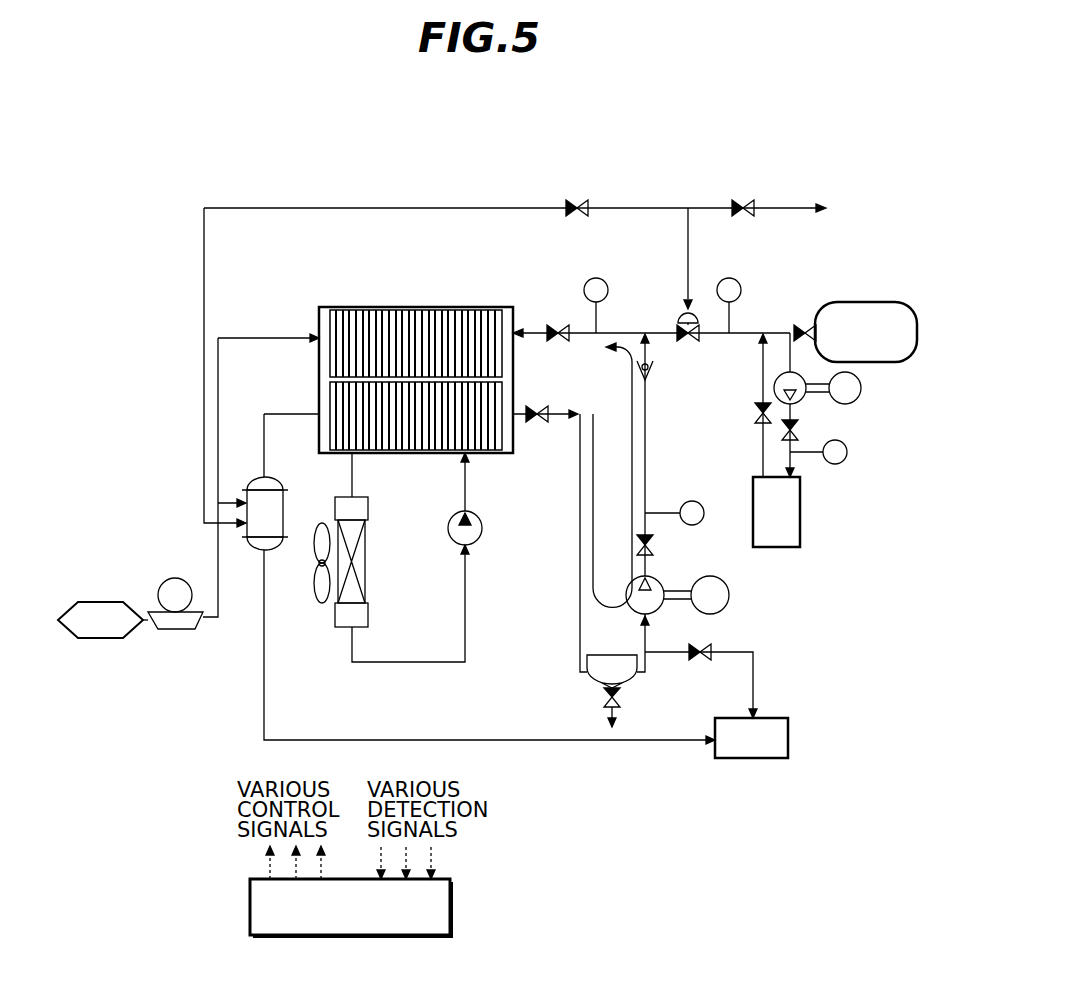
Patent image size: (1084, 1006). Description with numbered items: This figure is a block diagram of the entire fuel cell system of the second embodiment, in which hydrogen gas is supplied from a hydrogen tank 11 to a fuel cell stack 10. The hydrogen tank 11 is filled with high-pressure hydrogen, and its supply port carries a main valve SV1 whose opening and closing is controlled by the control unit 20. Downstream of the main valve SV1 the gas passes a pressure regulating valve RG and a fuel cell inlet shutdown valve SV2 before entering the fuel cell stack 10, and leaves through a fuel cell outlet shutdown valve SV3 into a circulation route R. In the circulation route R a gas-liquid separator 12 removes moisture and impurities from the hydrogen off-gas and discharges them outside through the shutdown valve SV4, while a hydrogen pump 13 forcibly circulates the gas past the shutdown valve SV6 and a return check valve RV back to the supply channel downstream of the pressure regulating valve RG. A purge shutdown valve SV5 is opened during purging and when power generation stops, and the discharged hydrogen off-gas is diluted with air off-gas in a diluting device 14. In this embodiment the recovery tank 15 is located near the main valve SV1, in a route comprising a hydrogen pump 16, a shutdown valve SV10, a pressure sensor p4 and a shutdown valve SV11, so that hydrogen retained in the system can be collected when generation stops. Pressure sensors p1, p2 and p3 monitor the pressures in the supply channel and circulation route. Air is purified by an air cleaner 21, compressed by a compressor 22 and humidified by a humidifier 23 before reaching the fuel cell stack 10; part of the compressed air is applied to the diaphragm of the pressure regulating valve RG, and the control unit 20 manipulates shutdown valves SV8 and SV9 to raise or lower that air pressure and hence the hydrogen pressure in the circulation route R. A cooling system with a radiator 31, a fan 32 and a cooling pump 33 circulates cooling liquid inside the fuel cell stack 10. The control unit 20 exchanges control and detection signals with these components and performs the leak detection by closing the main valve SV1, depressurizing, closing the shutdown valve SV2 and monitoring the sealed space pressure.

The fuel cell stack 10 is at (478, 306).
The hydrogen tank 11 is at (868, 302).
The gas-liquid separator 12 is at (597, 684).
The hydrogen pump 13 is at (660, 582).
The diluting device 14 is at (775, 718).
The recovery tank 15 is at (801, 522).
The hydrogen pump 16 is at (860, 393).
The control unit 20 is at (452, 910).
The air cleaner 21 is at (100, 602).
The compressor 22 is at (181, 579).
The humidifier 23 is at (270, 477).
The radiator 31 is at (364, 497).
The fan 32 is at (312, 557).
The cooling pump 33 is at (482, 526).
The main valve SV1 is at (800, 327).
The fuel cell inlet shutdown valve SV2 is at (560, 327).
The fuel cell outlet shutdown valve SV3 is at (545, 408).
The shutdown valve for gas-liquid separator SV4 is at (622, 697).
The purge shutdown valve SV5 is at (700, 662).
The circulation route shutdown valve SV6 is at (655, 545).
The shutdown valve SV8 is at (583, 204).
The shutdown valve SV9 is at (750, 204).
The shutdown valve SV10 is at (799, 430).
The shutdown valve SV11 is at (756, 413).
The pressure sensor p1 is at (732, 278).
The pressure sensor p2 is at (597, 278).
The pressure sensor p3 is at (692, 501).
The pressure sensor p4 is at (847, 452).
The pressure regulating valve RG is at (698, 340).
The return check valve RV is at (652, 366).
The circulation route R is at (609, 475).